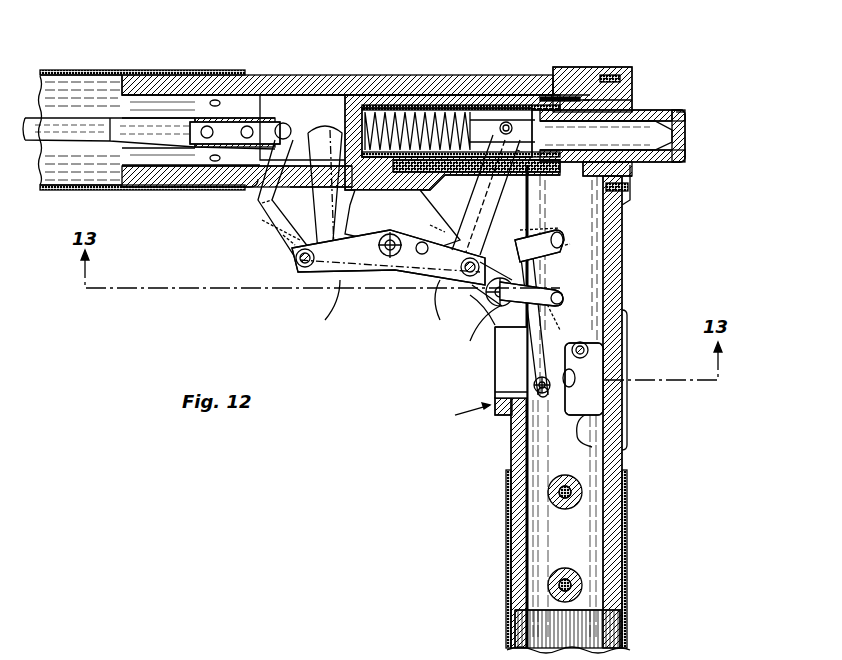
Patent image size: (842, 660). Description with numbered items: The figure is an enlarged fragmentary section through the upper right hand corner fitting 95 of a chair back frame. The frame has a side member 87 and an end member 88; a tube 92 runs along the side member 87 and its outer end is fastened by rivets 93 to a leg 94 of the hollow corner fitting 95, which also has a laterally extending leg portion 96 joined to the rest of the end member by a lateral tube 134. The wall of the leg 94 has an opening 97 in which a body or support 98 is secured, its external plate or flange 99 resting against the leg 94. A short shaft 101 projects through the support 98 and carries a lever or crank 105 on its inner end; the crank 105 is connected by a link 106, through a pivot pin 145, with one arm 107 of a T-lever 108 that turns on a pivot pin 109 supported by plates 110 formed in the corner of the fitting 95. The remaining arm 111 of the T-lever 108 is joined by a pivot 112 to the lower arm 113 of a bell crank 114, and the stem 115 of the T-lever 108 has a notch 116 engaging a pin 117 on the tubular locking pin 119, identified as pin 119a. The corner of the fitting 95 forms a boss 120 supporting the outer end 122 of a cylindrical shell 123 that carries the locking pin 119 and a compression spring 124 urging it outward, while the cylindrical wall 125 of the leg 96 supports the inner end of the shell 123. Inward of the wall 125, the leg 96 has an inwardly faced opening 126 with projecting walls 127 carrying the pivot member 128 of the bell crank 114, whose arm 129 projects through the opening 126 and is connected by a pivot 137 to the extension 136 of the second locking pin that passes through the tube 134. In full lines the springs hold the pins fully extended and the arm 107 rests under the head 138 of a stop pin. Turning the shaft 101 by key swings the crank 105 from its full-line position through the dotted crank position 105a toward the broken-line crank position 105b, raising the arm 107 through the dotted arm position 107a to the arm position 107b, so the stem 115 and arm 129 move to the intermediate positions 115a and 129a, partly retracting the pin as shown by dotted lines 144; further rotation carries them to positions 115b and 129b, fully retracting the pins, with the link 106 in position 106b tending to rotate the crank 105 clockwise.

The side member 87 is at (625, 517).
The end member 88 is at (92, 182).
The tube 92 is at (625, 626).
The rivets 93 is at (547, 494).
The leg 94 is at (625, 561).
The corner fitting 95 is at (452, 415).
The laterally extending leg portion 96 is at (266, 77).
The opening 97 is at (625, 443).
The body or support 98 is at (600, 402).
The external plate or flange 99 is at (625, 336).
The short shaft 101 is at (575, 381).
The lever or crank 105 is at (548, 422).
The trigger block 105a is at (530, 357).
The dotted line position of crank 105b is at (590, 359).
The link 106 is at (602, 301).
The broken line position of link 106b is at (612, 297).
The arm of T-lever 107 is at (540, 259).
The lever arm 107a is at (590, 243).
The dotted line position of arm 107b is at (618, 216).
The T-lever 108 is at (455, 292).
The pivot pin 109 is at (468, 287).
The plates 110 is at (485, 307).
The remaining arm of T-lever 111 is at (402, 267).
The pivot 112 is at (382, 260).
The lower arm of bell crank 113 is at (333, 313).
The bell crank 114 is at (285, 258).
The stem of T-lever 115 is at (545, 190).
The dotted line intermediate position of stem 115a is at (432, 205).
The broken line position of stem 115b is at (447, 218).
The notch 116 is at (506, 122).
The pin 117 is at (530, 112).
The tubular locking pin 119 is at (688, 137).
The locking pin 119a is at (677, 110).
The boss 120 is at (596, 68).
The outer end of shell 122 is at (634, 100).
The cylindrical shell 123 is at (567, 95).
The compression spring 124 is at (432, 96).
The cylindrical wall 125 is at (410, 104).
The inwardly faced opening 126 is at (324, 165).
The inwardly projecting walls 127 is at (277, 242).
The pivot member 128 is at (304, 270).
The arm of bell crank 129 is at (280, 224).
The dotted line intermediate position of arm 129a is at (266, 207).
The broken line position of arm 129b is at (286, 242).
The lateral tube 134 is at (88, 72).
The extension 136 is at (65, 125).
The pivot 137 is at (284, 128).
The head 138 is at (495, 337).
The dotted lines 144 is at (682, 112).
The pivot pin 145 is at (567, 284).